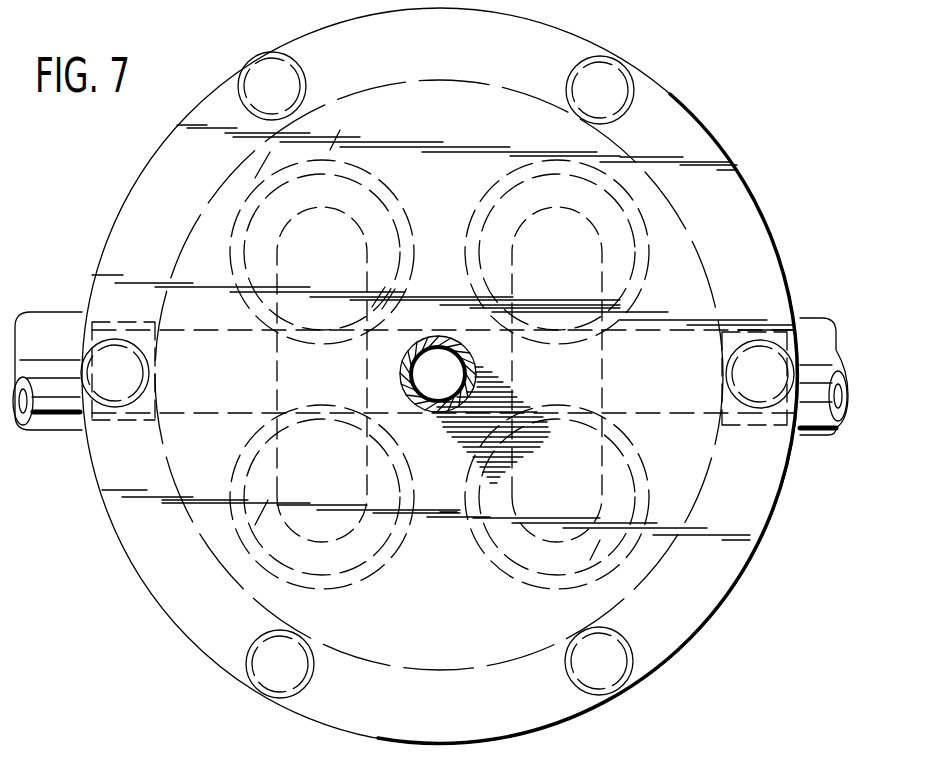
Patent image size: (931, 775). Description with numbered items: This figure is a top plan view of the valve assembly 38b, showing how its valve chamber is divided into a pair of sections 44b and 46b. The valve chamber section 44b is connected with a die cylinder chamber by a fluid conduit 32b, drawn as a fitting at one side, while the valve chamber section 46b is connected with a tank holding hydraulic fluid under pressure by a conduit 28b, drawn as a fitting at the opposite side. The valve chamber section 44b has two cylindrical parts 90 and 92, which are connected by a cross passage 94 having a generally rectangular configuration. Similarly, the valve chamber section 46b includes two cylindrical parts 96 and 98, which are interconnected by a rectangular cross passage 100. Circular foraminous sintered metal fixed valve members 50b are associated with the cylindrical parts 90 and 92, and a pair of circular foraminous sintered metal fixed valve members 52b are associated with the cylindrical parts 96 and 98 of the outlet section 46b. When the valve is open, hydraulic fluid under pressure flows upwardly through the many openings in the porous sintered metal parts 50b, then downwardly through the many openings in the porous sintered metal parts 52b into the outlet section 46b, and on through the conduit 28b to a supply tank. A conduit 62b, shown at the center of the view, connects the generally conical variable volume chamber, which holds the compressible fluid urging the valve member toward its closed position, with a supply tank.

The valve assembly 38b is at (735, 126).
The valve chamber section 44b is at (412, 127).
The valve chamber section 46b is at (527, 170).
The cylindrical part 92 is at (398, 203).
The cylindrical part 98 is at (648, 218).
The cylindrical part 90 is at (380, 570).
The cylindrical part 96 is at (650, 484).
The fixed valve member 50b is at (370, 242).
The fixed valve member 52b is at (626, 286).
The cross passage 94 is at (388, 298).
The conduit 62b is at (400, 367).
The cross passage 100 is at (512, 372).
The fluid conduit 32b is at (48, 325).
The conduit 28b is at (824, 330).